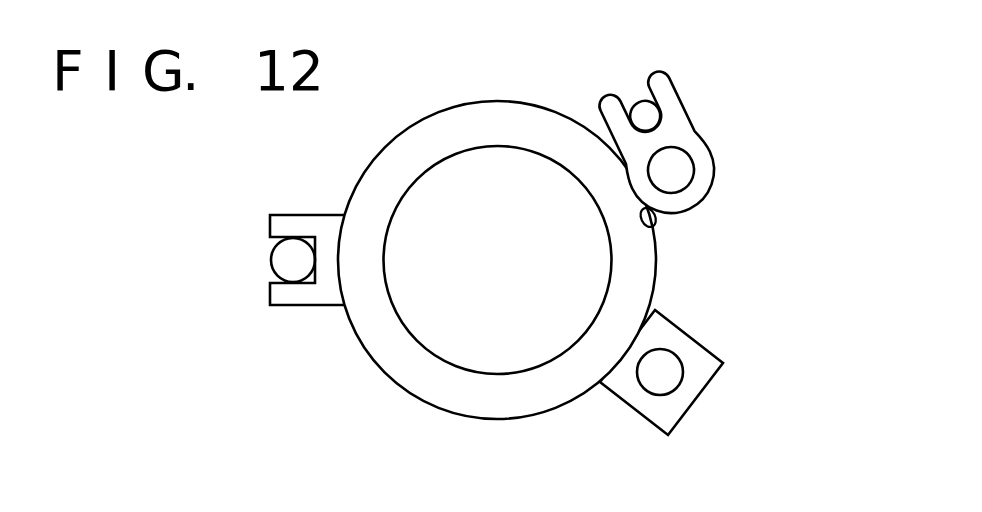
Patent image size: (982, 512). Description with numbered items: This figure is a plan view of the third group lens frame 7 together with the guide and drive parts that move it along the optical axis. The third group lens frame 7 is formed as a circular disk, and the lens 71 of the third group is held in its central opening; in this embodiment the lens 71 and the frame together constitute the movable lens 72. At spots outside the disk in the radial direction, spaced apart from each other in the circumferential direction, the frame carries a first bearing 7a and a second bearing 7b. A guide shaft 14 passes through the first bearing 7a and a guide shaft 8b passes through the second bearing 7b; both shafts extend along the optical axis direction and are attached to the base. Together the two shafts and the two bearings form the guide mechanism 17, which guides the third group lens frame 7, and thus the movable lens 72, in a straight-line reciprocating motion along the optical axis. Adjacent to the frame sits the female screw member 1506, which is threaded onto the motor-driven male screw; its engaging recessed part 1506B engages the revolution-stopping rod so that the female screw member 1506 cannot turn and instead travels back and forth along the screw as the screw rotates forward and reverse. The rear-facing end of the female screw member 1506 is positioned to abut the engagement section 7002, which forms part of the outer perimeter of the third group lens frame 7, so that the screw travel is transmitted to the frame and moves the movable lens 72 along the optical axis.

The third group lens frame 7 is at (553, 215).
The lens 71 is at (418, 210).
The movable lens 72 is at (465, 100).
The first bearing 7a is at (697, 340).
The second bearing 7b is at (303, 228).
The guide shaft 8b is at (270, 258).
The guide shaft 14 is at (643, 390).
The guide mechanism 17 is at (705, 407).
The female screw member 1506 is at (693, 126).
The engaging recessed part 1506B is at (625, 98).
The engagement section 7002 is at (636, 229).